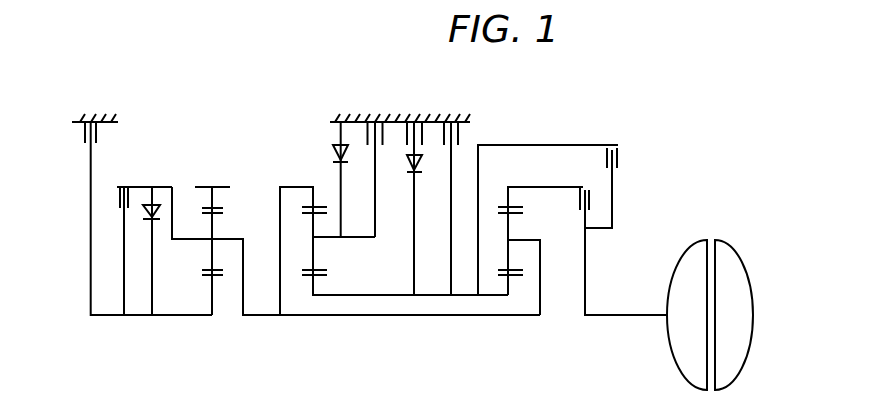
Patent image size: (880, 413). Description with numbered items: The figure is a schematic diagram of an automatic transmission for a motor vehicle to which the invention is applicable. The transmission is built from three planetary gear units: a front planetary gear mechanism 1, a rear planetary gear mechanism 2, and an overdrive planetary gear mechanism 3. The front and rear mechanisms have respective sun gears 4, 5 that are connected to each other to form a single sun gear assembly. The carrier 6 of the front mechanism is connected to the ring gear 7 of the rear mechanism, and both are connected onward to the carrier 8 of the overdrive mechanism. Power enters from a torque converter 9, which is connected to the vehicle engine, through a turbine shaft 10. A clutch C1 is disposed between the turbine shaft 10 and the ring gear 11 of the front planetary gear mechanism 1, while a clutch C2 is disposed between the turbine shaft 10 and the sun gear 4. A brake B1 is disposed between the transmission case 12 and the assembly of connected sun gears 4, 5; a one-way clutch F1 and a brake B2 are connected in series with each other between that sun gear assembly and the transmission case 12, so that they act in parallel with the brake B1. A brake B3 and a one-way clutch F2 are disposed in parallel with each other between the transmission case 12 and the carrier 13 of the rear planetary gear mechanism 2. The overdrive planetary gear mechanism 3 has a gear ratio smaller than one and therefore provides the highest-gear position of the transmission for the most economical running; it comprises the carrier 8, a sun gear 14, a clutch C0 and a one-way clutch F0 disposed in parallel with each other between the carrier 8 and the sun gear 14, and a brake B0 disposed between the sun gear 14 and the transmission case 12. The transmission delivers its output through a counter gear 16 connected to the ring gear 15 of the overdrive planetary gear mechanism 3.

The front planetary gear mechanism 1 is at (515, 297).
The rear planetary gear mechanism 2 is at (305, 283).
The overdrive planetary gear mechanism 3 is at (205, 281).
The sun gear 4 is at (523, 277).
The sun gear 5 is at (323, 275).
The carrier 6 is at (530, 240).
The ring gear 7 is at (318, 205).
The carrier 8 is at (245, 278).
The torque converter 9 is at (752, 292).
The turbine shaft 10 is at (623, 314).
The ring gear 11 is at (508, 208).
The transmission case 12 is at (79, 123).
The carrier 13 is at (332, 240).
The sun gear 14 is at (218, 277).
The ring gear 15 is at (220, 205).
The counter gear 16 is at (227, 187).
The brake B0 is at (96, 135).
The brake B1 is at (460, 134).
The brake B2 is at (408, 135).
The brake B3 is at (368, 135).
The clutch C0 is at (142, 184).
The clutch C1 is at (595, 195).
The clutch C2 is at (620, 157).
The one-way clutch F0 is at (156, 217).
The one-way clutch F1 is at (408, 163).
The one-way clutch F2 is at (335, 151).